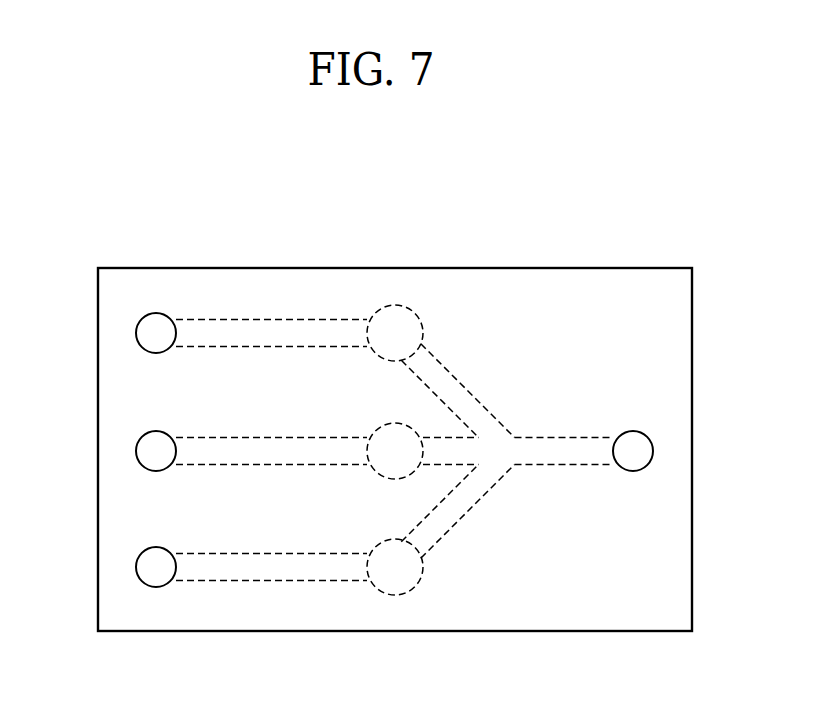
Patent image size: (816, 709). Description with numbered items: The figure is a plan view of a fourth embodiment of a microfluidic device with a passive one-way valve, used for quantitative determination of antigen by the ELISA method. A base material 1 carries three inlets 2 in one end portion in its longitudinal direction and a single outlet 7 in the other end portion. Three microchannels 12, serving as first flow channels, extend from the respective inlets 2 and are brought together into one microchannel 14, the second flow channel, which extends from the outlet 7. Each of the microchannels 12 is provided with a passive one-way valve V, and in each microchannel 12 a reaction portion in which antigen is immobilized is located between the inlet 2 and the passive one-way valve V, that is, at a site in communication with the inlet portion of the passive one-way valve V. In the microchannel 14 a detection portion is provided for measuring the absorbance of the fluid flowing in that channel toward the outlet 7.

The base material 1 is at (641, 285).
The inlet 2 is at (142, 335).
The microchannel 12 is at (282, 327).
The passive one-way valve V is at (398, 318).
The microchannel 14 is at (572, 447).
The outlet 7 is at (643, 447).